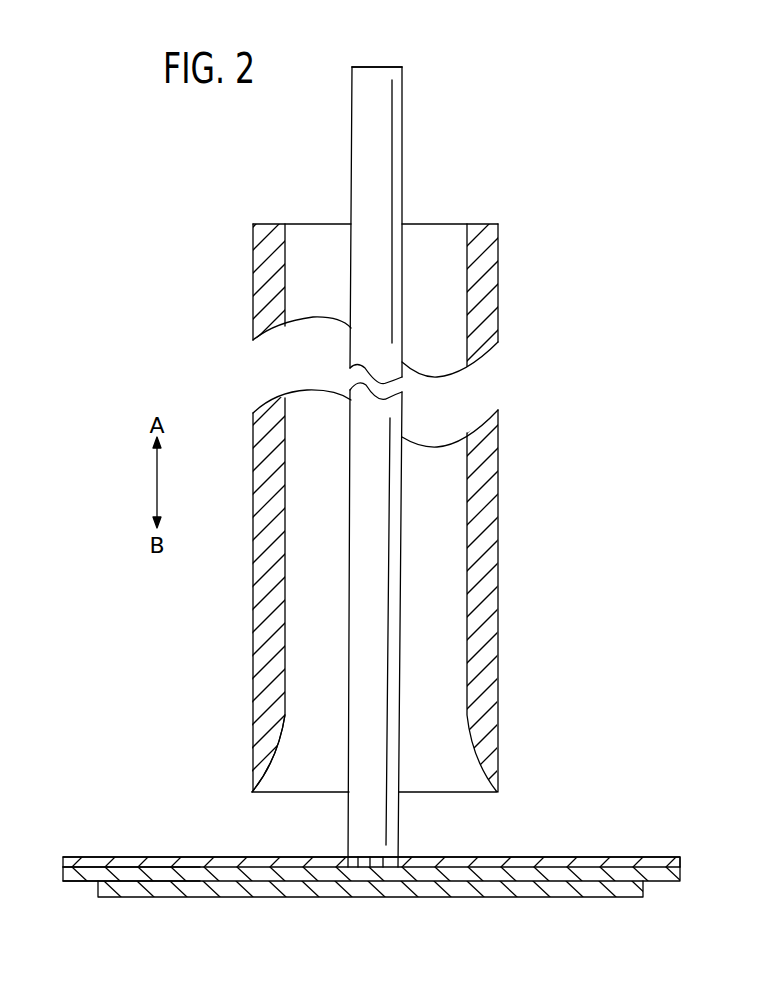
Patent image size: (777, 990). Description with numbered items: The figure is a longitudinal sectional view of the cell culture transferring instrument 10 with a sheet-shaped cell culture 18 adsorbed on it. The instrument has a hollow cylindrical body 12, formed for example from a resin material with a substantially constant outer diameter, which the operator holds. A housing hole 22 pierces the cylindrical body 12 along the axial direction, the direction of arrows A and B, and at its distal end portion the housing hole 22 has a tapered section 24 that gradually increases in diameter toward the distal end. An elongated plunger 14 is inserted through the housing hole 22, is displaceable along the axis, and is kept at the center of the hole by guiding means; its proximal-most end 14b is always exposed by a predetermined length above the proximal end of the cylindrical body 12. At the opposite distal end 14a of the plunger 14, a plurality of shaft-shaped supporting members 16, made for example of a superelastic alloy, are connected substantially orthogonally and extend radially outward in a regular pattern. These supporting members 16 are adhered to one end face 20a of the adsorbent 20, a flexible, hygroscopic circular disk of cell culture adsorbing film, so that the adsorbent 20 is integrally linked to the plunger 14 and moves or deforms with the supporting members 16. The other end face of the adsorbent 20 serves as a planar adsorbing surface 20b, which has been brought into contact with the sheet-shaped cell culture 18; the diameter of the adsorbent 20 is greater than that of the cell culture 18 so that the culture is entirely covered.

The cell culture transferring instrument 10 is at (534, 128).
The cylindrical body 12 is at (486, 272).
The plunger 14 is at (364, 124).
The distal end of the plunger 14a is at (349, 868).
The proximal-most end of the plunger 14b is at (382, 67).
The supporting member 16 is at (140, 860).
The sheet-shaped cell culture 18 is at (498, 888).
The adsorbent 20 is at (668, 880).
The one end face of the adsorbent 20a is at (100, 863).
The adsorbing surface 20b is at (90, 883).
The housing hole 22 is at (302, 613).
The tapered section 24 is at (273, 752).